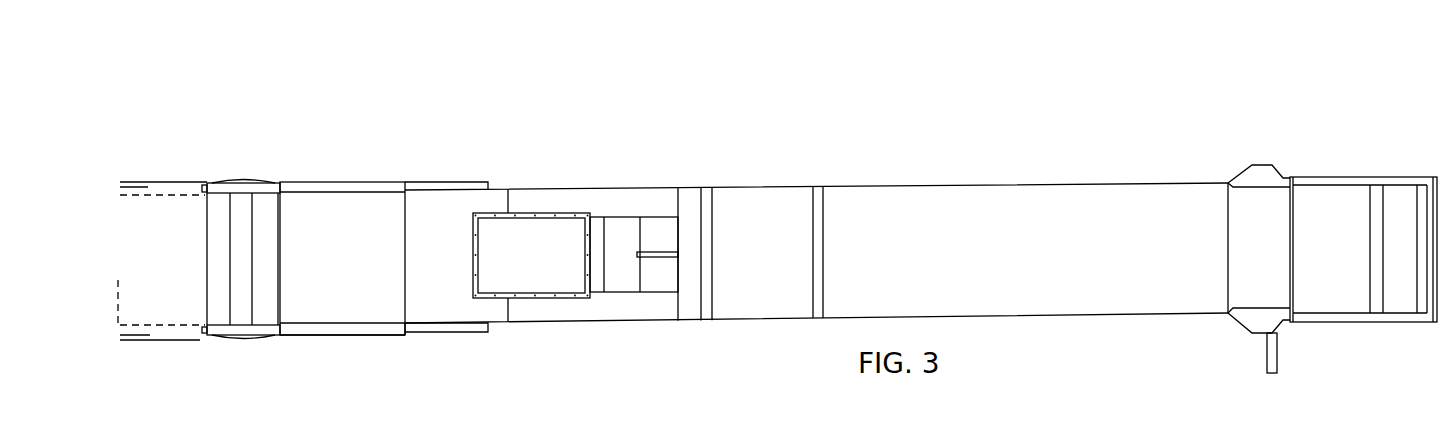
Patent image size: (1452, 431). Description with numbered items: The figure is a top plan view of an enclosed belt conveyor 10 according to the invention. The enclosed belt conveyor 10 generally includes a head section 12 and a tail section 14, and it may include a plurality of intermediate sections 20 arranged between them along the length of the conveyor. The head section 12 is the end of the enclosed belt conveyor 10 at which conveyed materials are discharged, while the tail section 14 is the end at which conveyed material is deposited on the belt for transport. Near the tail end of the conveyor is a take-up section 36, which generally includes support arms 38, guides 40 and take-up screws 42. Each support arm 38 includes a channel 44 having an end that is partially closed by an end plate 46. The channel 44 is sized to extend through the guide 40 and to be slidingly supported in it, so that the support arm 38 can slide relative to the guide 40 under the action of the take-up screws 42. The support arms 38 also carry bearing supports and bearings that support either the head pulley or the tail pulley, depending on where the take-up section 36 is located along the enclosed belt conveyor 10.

The enclosed belt conveyor 10 is at (612, 120).
The head section 12 is at (1306, 178).
The tail section 14 is at (330, 338).
The intermediate sections 20 is at (805, 187).
The take-up section 36 is at (350, 182).
The support arms 38 is at (220, 183).
The guides 40 is at (372, 338).
The take-up screws 42 is at (206, 336).
The channel 44 is at (452, 333).
The end plate 46 is at (485, 310).